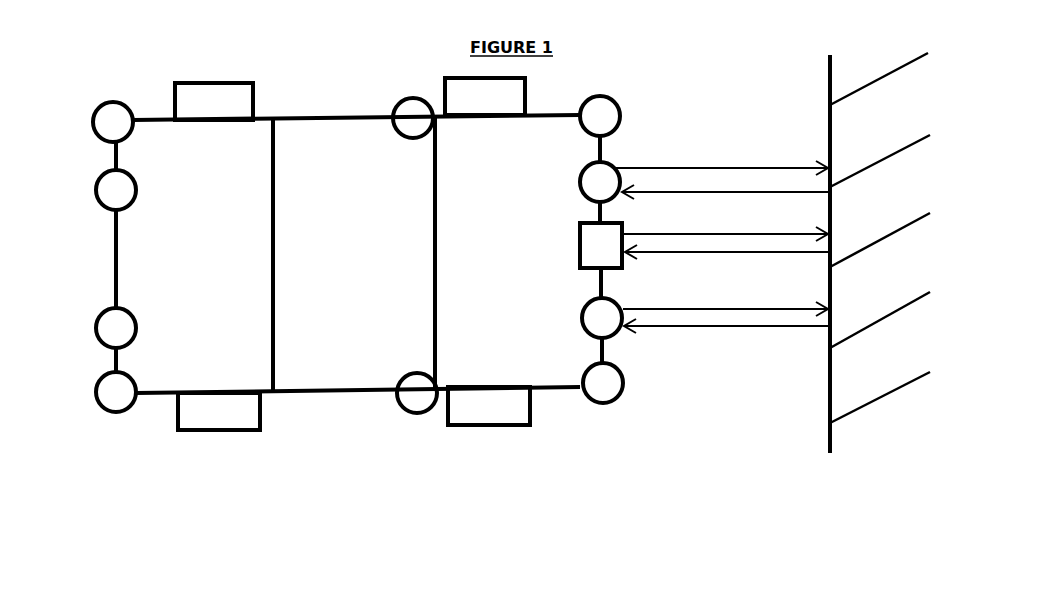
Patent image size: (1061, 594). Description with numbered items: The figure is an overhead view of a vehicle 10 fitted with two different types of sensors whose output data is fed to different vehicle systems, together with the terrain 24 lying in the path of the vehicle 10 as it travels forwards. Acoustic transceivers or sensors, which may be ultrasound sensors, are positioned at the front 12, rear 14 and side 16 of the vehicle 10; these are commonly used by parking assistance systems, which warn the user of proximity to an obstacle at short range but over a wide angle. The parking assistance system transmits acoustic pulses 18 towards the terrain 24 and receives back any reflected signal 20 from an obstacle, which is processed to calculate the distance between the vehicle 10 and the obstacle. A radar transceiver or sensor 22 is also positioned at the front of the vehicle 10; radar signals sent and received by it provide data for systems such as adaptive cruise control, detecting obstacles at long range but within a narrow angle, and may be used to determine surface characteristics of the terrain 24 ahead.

The vehicle 10 is at (350, 455).
The front acoustic sensors 12 is at (610, 162).
The rear acoustic sensors 14 is at (100, 340).
The side acoustic sensors 16 is at (417, 414).
The acoustic pulses 18 is at (703, 166).
The reflected signal 20 is at (747, 191).
The radar sensor 22 is at (613, 268).
The terrain 24 is at (889, 437).